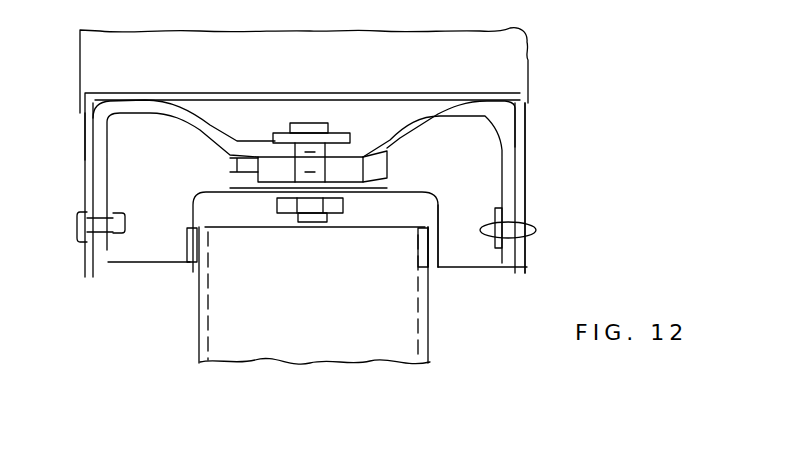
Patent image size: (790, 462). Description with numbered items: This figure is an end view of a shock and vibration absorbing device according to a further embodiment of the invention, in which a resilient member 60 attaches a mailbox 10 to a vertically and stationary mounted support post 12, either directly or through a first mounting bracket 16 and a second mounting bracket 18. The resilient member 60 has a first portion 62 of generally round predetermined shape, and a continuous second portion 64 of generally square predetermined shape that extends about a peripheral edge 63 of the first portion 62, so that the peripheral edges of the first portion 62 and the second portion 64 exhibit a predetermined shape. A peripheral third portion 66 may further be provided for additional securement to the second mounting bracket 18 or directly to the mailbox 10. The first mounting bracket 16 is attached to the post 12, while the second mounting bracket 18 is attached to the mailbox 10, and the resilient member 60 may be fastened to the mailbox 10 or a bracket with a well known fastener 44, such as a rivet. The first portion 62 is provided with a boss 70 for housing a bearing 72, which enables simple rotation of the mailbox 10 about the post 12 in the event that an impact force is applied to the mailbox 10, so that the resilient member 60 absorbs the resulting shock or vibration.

The mailbox 10 is at (515, 60).
The support post 12 is at (413, 367).
The first mounting bracket 16 is at (440, 238).
The second mounting bracket 18 is at (528, 168).
The fastener 44 is at (76, 228).
The resilient member 60 is at (590, 97).
The first portion 62 is at (268, 147).
The peripheral edge 63 is at (378, 143).
The second portion 64 is at (437, 117).
The third portion 66 is at (513, 200).
The boss 70 is at (237, 173).
The bearing 72 is at (400, 178).